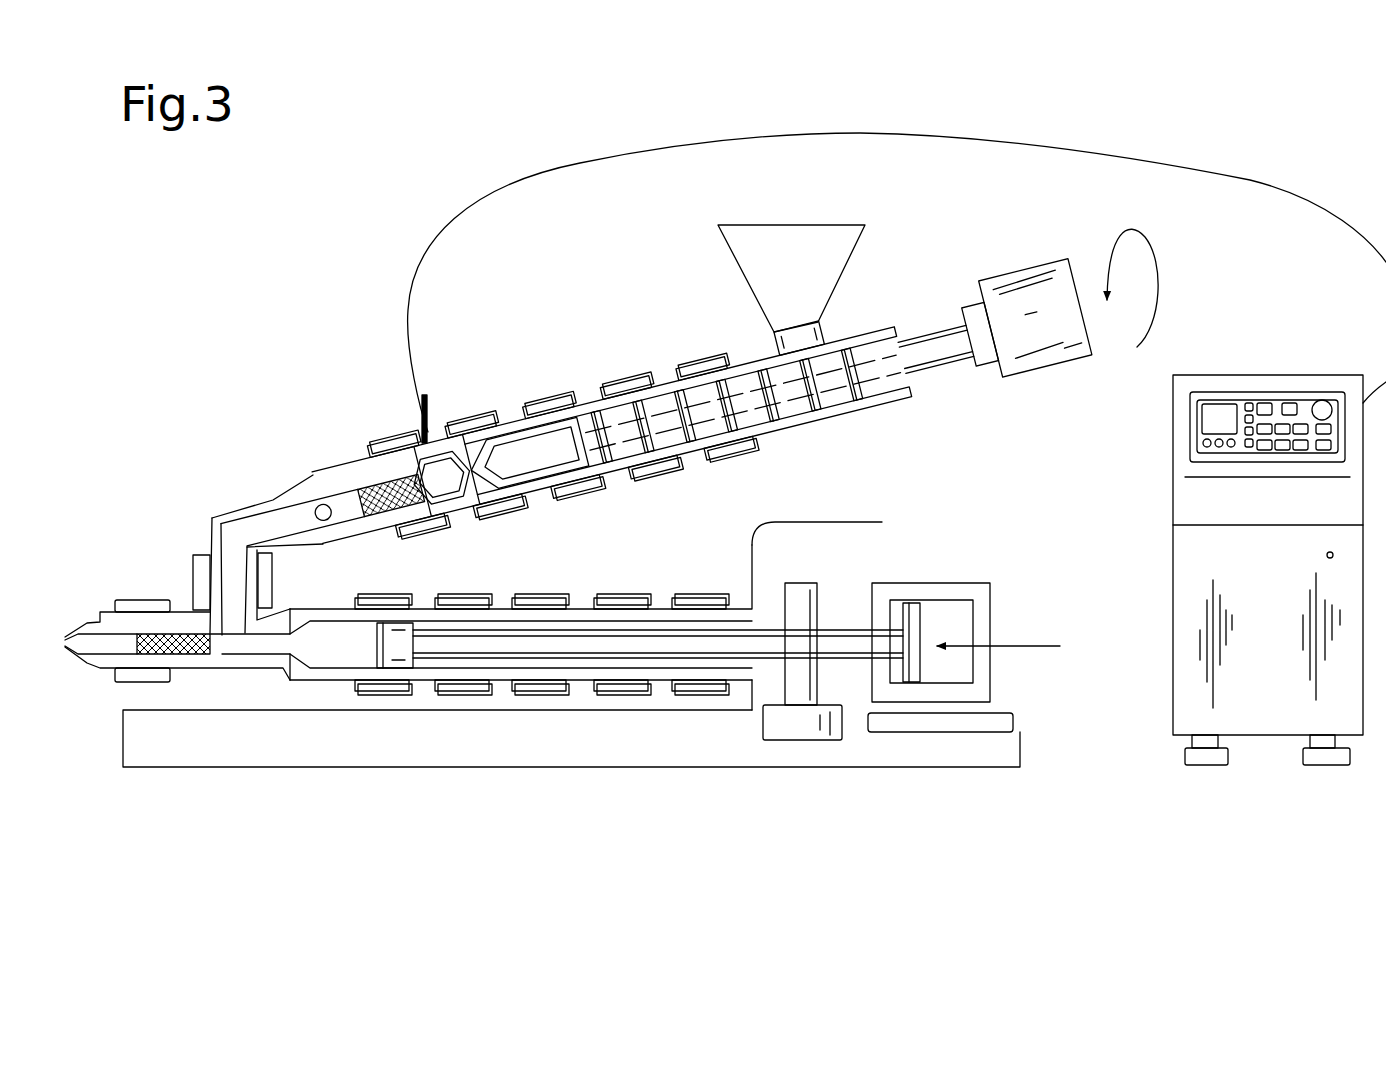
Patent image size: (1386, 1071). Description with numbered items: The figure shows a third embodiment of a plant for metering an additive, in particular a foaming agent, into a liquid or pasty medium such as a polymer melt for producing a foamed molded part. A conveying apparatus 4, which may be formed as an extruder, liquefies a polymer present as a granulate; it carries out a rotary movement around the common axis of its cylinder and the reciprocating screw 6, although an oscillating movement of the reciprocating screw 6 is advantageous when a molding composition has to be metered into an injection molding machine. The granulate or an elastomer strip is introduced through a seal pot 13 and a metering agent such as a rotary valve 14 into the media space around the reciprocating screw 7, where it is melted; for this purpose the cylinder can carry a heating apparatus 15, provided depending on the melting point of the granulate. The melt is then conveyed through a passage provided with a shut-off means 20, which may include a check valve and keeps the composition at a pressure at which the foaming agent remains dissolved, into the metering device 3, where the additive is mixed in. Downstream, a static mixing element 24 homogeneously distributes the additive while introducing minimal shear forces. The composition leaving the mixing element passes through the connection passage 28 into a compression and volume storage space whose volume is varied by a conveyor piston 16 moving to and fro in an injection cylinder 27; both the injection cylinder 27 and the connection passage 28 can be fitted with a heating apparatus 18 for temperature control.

The metering device 3 is at (428, 478).
The conveying apparatus 4 is at (322, 322).
The reciprocating screw 6 is at (613, 397).
The reciprocating screw 7 is at (507, 458).
The seal pot 13 is at (848, 240).
The rotary valve 14 is at (815, 342).
The heating apparatus 15 is at (537, 397).
The conveyor piston 16 is at (392, 660).
The heating apparatus 18 is at (203, 578).
The shut-off means 20 is at (323, 502).
The static mixing element 24 is at (383, 483).
The injection cylinder 27 is at (500, 672).
The connection passage 28 is at (240, 540).